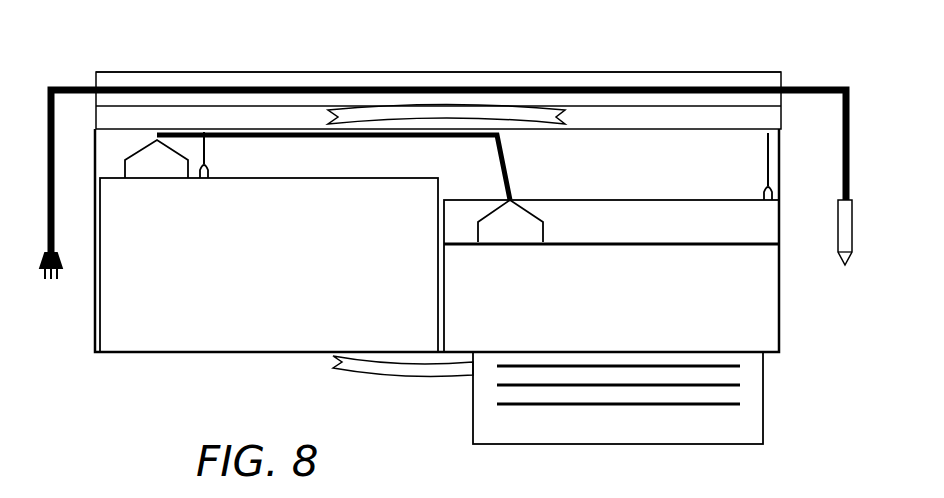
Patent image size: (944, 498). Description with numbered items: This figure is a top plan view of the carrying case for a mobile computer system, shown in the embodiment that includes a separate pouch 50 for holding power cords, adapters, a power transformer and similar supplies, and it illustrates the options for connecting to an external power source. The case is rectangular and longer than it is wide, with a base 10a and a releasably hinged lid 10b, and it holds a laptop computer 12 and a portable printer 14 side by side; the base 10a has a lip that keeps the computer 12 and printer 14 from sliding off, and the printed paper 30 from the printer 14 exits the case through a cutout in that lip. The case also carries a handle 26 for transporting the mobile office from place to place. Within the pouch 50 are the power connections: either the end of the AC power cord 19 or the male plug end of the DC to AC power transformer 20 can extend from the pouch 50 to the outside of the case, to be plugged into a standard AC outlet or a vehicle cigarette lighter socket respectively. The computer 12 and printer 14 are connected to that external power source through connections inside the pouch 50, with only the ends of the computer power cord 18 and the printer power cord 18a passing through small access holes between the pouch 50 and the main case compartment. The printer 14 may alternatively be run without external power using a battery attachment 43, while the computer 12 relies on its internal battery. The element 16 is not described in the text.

The base 10a is at (93, 337).
The releasably hinged lid 10b is at (108, 117).
The laptop computer 12 is at (192, 320).
The portable printer 14 is at (760, 327).
The support bar / shelf 16 is at (333, 143).
The computer power cord 18 is at (208, 152).
The printer power cord 18a is at (768, 160).
The AC power cord 19 is at (55, 232).
The DC to AC power transformer 20 is at (851, 160).
The handle 26 is at (443, 107).
The paper 30 is at (738, 423).
The battery attachment 43 is at (578, 217).
The separate pouch 50 is at (754, 77).